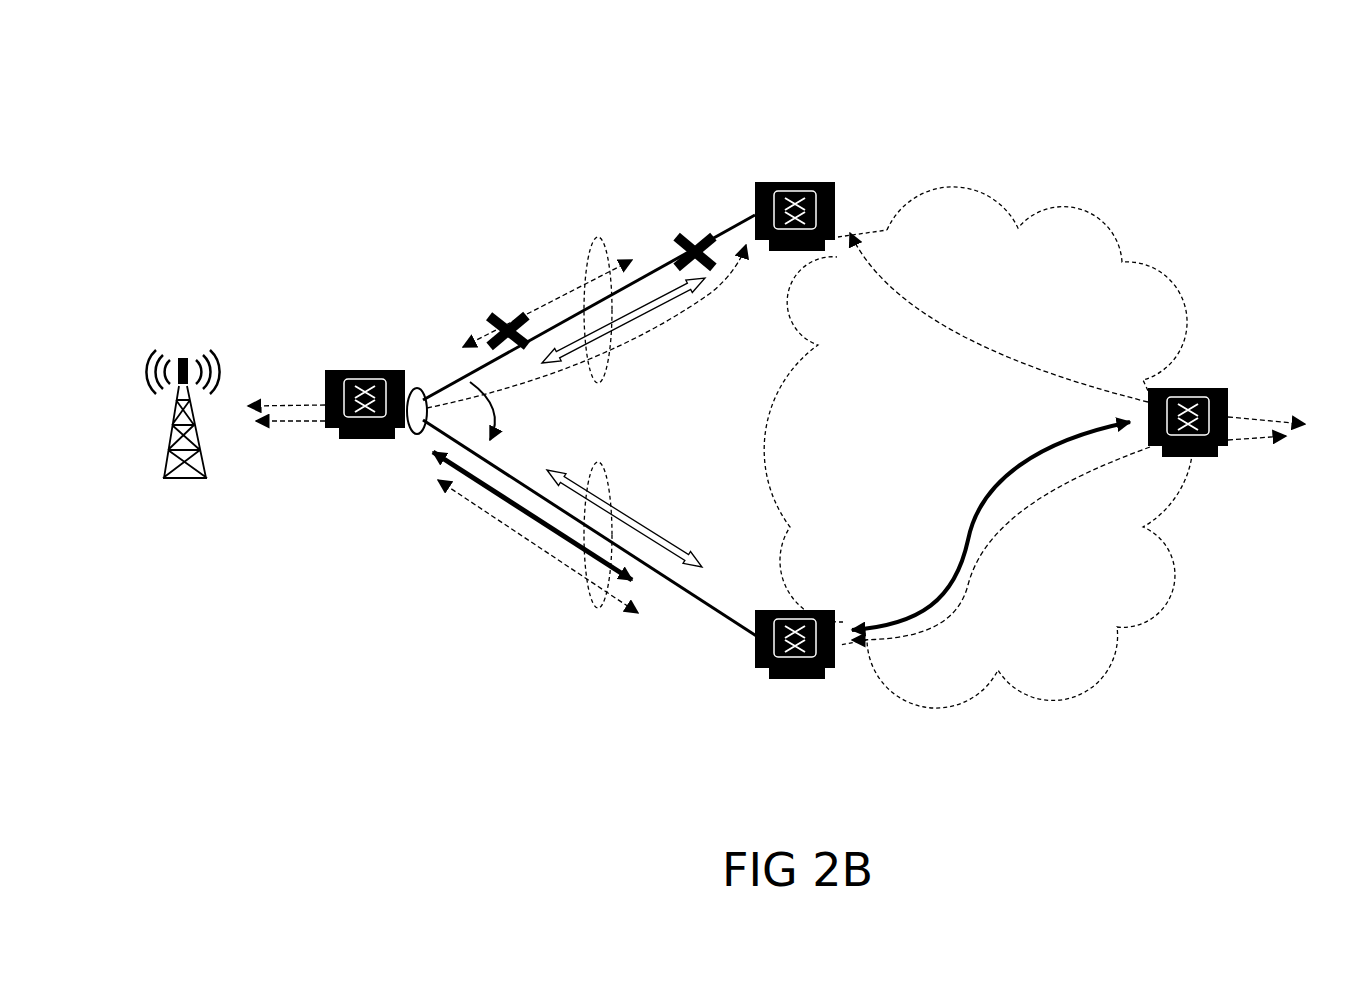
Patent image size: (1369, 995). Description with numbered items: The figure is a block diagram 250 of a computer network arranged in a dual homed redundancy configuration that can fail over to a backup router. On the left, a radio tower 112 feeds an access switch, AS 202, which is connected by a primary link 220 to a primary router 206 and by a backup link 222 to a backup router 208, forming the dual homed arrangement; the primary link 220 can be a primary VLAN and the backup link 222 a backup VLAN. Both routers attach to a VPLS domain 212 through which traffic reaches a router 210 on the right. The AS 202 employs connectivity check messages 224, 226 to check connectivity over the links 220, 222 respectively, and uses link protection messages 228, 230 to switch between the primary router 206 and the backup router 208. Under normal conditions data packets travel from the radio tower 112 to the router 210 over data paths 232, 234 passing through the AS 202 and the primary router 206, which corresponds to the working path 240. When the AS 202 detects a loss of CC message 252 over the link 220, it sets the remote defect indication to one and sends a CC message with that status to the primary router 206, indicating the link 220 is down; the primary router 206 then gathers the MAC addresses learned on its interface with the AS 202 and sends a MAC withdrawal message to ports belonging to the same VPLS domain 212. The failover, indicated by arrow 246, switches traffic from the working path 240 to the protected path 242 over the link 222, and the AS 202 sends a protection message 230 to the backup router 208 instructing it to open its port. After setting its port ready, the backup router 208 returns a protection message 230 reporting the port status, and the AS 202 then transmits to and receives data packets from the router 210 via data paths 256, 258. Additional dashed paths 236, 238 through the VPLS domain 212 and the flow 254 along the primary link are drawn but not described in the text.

The block diagram 250 is at (305, 70).
The radio tower 112 is at (186, 356).
The AS 202 is at (370, 366).
The data path 256 is at (410, 434).
The primary link 220 is at (684, 232).
The CC message 252 is at (506, 316).
The 802.1ag message 224 is at (583, 292).
The working path 240 is at (600, 240).
The traffic flow on link 220 254 is at (668, 308).
The G.8031 message 228 is at (628, 340).
The data path 232 is at (530, 380).
The failover arrow 246 is at (497, 410).
The primary router 206 is at (797, 181).
The backup link 222 is at (667, 586).
The 802.1ag message 226 is at (552, 556).
The protected path 242 is at (598, 606).
The data path 234 is at (596, 466).
The G.8031 message 230 is at (656, 506).
The backup router 208 is at (782, 669).
The VPLS domain 212 is at (1075, 208).
The VPLS path to router 206 236 is at (955, 333).
The VPLS path to router 208 238 is at (986, 546).
The data path 258 is at (952, 578).
The router 210 is at (1190, 388).